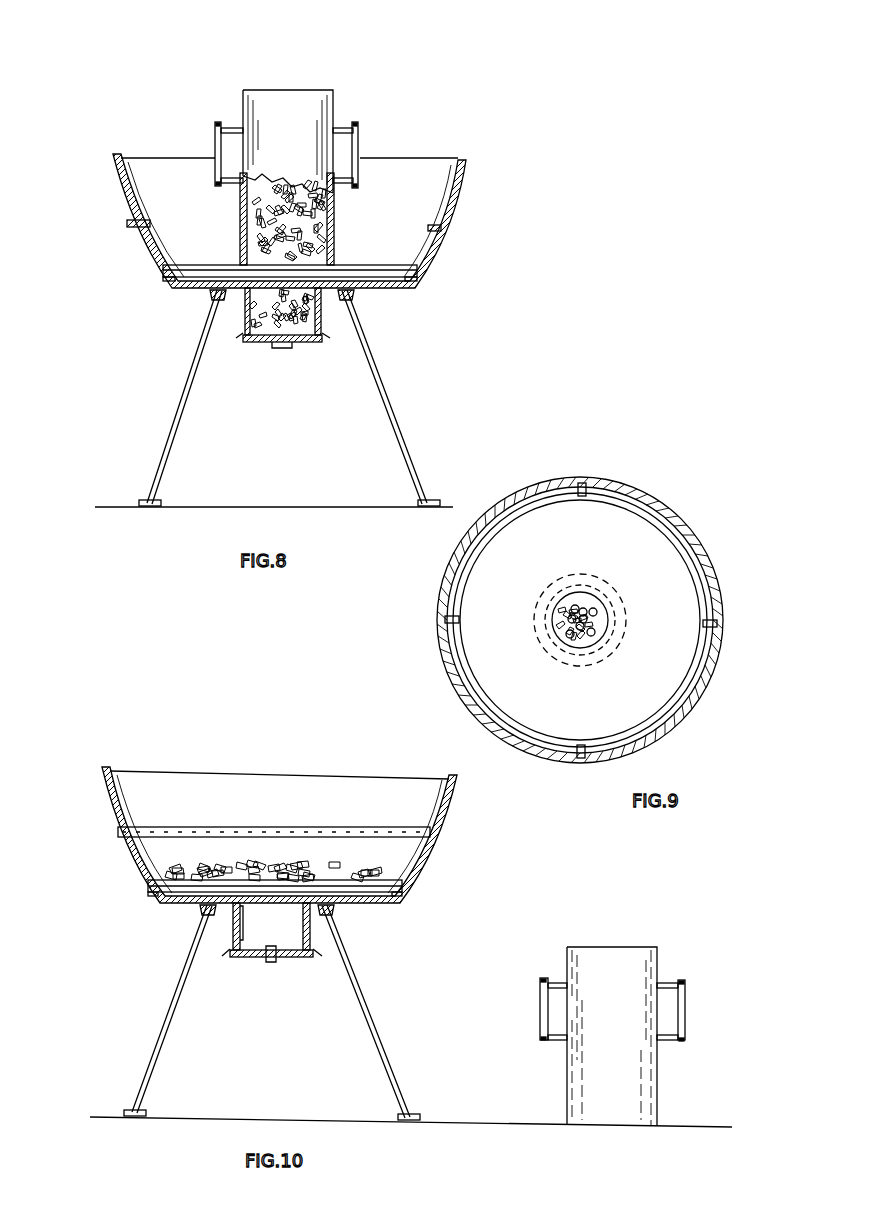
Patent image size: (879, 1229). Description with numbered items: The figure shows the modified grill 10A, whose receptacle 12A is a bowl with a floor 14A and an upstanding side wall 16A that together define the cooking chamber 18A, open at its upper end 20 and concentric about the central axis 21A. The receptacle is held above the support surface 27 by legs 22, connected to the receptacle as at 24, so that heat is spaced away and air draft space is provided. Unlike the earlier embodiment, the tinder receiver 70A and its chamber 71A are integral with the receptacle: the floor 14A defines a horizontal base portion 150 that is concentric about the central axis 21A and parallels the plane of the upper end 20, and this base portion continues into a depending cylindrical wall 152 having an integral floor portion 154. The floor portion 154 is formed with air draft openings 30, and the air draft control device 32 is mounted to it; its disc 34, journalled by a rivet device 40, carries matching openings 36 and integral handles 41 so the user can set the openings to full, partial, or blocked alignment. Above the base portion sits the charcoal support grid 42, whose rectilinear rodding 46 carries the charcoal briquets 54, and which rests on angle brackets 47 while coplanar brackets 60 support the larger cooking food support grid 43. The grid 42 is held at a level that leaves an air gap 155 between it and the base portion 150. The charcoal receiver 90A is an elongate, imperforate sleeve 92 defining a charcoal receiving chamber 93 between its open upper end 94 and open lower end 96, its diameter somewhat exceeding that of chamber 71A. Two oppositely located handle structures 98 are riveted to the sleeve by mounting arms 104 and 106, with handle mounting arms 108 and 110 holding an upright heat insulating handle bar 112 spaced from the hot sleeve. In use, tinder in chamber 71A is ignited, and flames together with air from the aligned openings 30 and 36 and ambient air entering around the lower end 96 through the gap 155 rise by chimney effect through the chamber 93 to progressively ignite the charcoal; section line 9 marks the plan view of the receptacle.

In FIG. 8, the modified grill 10A is at (498, 124).
In FIG. 10, the modified grill 10A is at (135, 752).
In FIG. 8, the receptacle 12A is at (472, 186).
In FIG. 9, the receptacle 12A is at (690, 500).
In FIG. 10, the receptacle 12A is at (101, 808).
In FIG. 8, the floor 14A is at (407, 290).
In FIG. 9, the floor 14A is at (487, 580).
In FIG. 10, the floor 14A is at (365, 914).
In FIG. 8, the side wall 16A is at (462, 212).
In FIG. 9, the side wall 16A is at (700, 531).
In FIG. 8, the cooking chamber 18A is at (196, 170).
In FIG. 9, the cooking chamber 18A is at (631, 500).
In FIG. 8, the upper end 20 is at (140, 158).
In FIG. 9, the central axis 21A is at (601, 600).
In FIG. 8, the legs 22 is at (406, 446).
In FIG. 10, the legs 22 is at (386, 1025).
In FIG. 8, the leg connection 24 is at (190, 283).
In FIG. 8, the support surface 27 is at (113, 505).
In FIG. 8, the air draft openings 30 is at (322, 318).
In FIG. 9, the air draft openings 30 is at (578, 594).
In FIG. 10, the air draft openings 30 is at (258, 946).
In FIG. 8, the air draft control device 32 is at (306, 358).
In FIG. 10, the air draft control device 32 is at (299, 972).
In FIG. 8, the disc 34 is at (274, 346).
In FIG. 8, the disc air draft openings 36 is at (262, 346).
In FIG. 10, the disc air draft openings 36 is at (256, 960).
In FIG. 8, the rivet device 40 is at (283, 360).
In FIG. 10, the rivet device 40 is at (270, 972).
In FIG. 8, the handles 41 is at (246, 344).
In FIG. 10, the handles 41 is at (234, 952).
In FIG. 8, the charcoal support grid 42 is at (382, 268).
In FIG. 10, the charcoal support grid 42 is at (182, 890).
In FIG. 10, the cooking food support grid 43 is at (386, 829).
In FIG. 9, the rectilinear rodding 46 is at (584, 481).
In FIG. 10, the angle brackets 47 is at (146, 898).
In FIG. 8, the charcoal briquets 54 is at (318, 215).
In FIG. 8, the grid support brackets 60 is at (128, 222).
In FIG. 8, the tinder receiver 70A is at (242, 318).
In FIG. 9, the tinder receiver 70A is at (561, 636).
In FIG. 10, the tinder receiver 70A is at (278, 882).
In FIG. 8, the tinder chamber 71A is at (237, 336).
In FIG. 9, the tinder chamber 71A is at (558, 643).
In FIG. 10, the tinder chamber 71A is at (300, 892).
In FIG. 8, the charcoal receiver 90A is at (338, 74).
In FIG. 10, the charcoal receiver 90A is at (662, 921).
In FIG. 8, the sleeve 92 is at (290, 100).
In FIG. 10, the sleeve 92 is at (610, 958).
In FIG. 8, the charcoal receiving chamber 93 is at (240, 206).
In FIG. 8, the open upper end 94 is at (244, 88).
In FIG. 10, the open upper end 94 is at (567, 946).
In FIG. 8, the open lower end 96 is at (242, 250).
In FIG. 10, the open lower end 96 is at (572, 1122).
In FIG. 8, the handle structures 98 is at (382, 118).
In FIG. 10, the handle structures 98 is at (696, 975).
In FIG. 8, the mounting arm 104 is at (340, 120).
In FIG. 10, the mounting arm 104 is at (662, 980).
In FIG. 8, the mounting arm 106 is at (338, 184).
In FIG. 10, the mounting arm 106 is at (660, 1056).
In FIG. 8, the handle mounting arm 108 is at (360, 128).
In FIG. 10, the handle mounting arm 108 is at (687, 989).
In FIG. 8, the handle mounting arm 110 is at (360, 183).
In FIG. 10, the handle mounting arm 110 is at (687, 1039).
In FIG. 8, the handle bar 112 is at (360, 148).
In FIG. 10, the handle bar 112 is at (687, 1010).
In FIG. 8, the horizontal base portion 150 is at (384, 290).
In FIG. 10, the horizontal base portion 150 is at (382, 906).
In FIG. 8, the cylindrical wall 152 is at (240, 302).
In FIG. 10, the cylindrical wall 152 is at (233, 922).
In FIG. 8, the floor portion 154 is at (304, 270).
In FIG. 10, the floor portion 154 is at (236, 936).
In FIG. 8, the air gap 155 is at (170, 287).
In FIG. 10, the air gap 155 is at (194, 896).
In FIG. 8, the section line 9- 9 is at (82, 290).